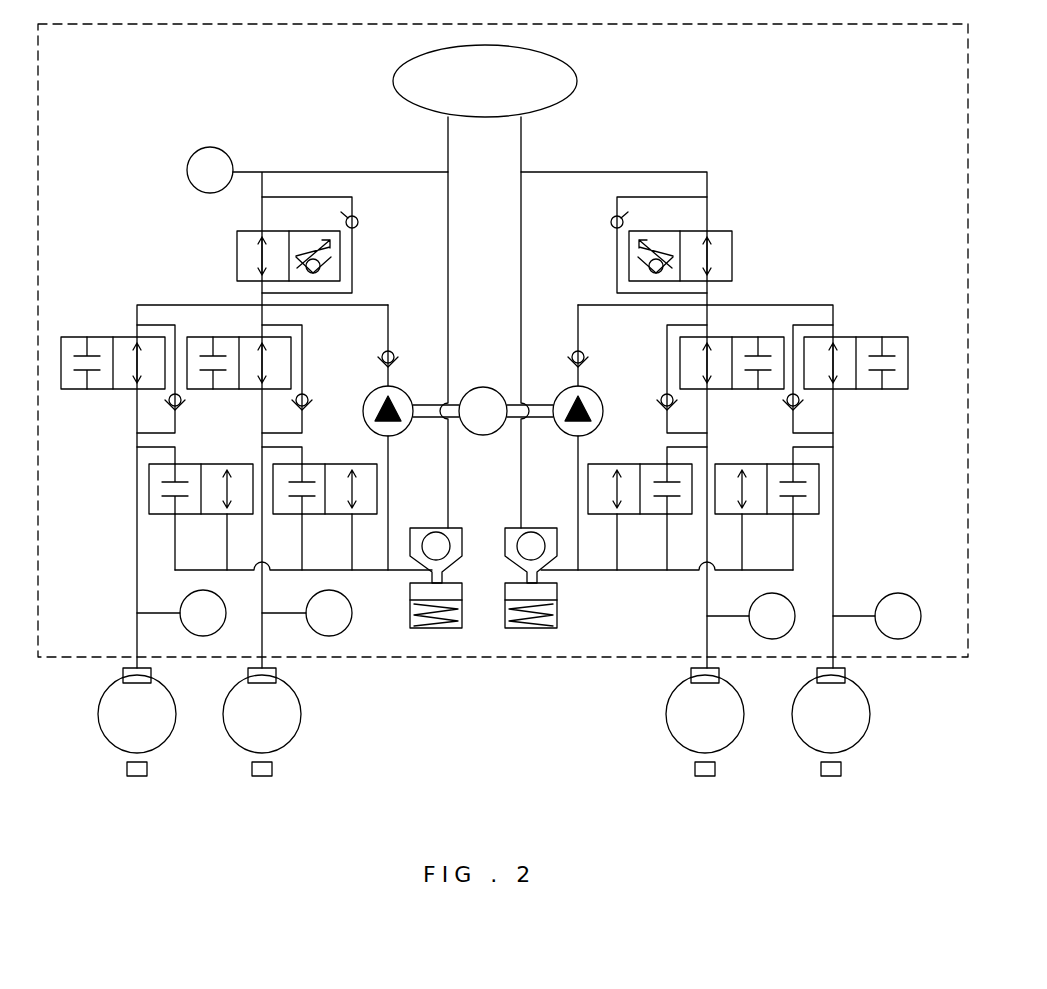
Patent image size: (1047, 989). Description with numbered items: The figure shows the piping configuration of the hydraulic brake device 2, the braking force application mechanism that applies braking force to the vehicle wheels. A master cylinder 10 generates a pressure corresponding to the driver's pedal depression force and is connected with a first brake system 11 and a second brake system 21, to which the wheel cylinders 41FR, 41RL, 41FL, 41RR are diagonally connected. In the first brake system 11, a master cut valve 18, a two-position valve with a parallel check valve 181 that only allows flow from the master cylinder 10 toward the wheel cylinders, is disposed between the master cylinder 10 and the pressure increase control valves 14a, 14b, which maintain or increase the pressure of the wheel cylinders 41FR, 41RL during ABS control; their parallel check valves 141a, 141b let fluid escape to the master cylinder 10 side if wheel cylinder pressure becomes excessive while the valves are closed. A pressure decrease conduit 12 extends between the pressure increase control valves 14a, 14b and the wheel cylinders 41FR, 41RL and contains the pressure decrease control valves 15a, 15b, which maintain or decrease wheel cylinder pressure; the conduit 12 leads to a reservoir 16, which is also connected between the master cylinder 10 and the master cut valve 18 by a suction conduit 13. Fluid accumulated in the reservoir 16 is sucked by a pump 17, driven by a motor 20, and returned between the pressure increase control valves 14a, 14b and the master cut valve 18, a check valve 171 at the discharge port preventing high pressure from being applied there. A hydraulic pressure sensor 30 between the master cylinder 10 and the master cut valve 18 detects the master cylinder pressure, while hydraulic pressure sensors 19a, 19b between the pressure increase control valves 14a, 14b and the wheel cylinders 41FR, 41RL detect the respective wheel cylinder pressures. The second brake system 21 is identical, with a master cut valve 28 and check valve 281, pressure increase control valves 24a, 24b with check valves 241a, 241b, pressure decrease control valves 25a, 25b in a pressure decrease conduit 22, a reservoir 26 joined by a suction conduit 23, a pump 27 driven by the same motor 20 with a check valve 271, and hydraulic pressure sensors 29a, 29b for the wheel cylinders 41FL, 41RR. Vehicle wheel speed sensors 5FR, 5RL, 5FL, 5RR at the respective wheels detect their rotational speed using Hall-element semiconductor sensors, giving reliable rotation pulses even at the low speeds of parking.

The hydraulic brake device 2 is at (968, 83).
The master cylinder 10 is at (577, 82).
The first brake system 11 is at (448, 145).
The second brake system 21 is at (521, 145).
The suction conduit 13 is at (448, 285).
The reservoir conduit (second system) 23 is at (521, 285).
The hydraulic pressure sensor 30 is at (210, 147).
The master cut valve 18 is at (237, 255).
The check valve 181 is at (358, 222).
The second master cut (pressure regulating) valve 28 is at (732, 255).
The check valve of second master cut valve 281 is at (611, 222).
The pressure increase control valve 14a is at (97, 337).
The pressure increase control valve 14b is at (218, 337).
The pressure increase valve (front left) 24a is at (748, 337).
The pressure increase valve (rear right) 24b is at (868, 337).
The check valve 141a is at (165, 405).
The check valve 141b is at (331, 379).
The check valve of pressure increase valve 24a 241a is at (664, 395).
The check valve of pressure increase valve 24b 241b is at (800, 405).
The pressure decrease control valve 15a is at (215, 464).
The pressure decrease control valve 15b is at (340, 464).
The pressure reducing valve (front left) 25a is at (632, 464).
The pressure reducing valve (rear right) 25b is at (752, 464).
The pressure decrease conduit 12 is at (212, 570).
The second pressure reducing conduit 22 is at (622, 570).
The pump 17 is at (408, 434).
The check valve 171 is at (382, 352).
The pump 27 is at (560, 434).
The check valve of second pump 271 is at (584, 352).
The motor 20 is at (483, 435).
The reservoir 16 is at (410, 610).
The second reservoir 26 is at (557, 610).
The hydraulic pressure sensor 19a is at (182, 605).
The hydraulic pressure sensor 19b is at (308, 605).
The hydraulic pressure sensor 29a is at (790, 597).
The hydraulic pressure sensor 29b is at (912, 595).
The wheel cylinder 41FR is at (122, 673).
The wheel cylinder 41RL is at (276, 673).
The wheel cylinder 41FL is at (690, 673).
The wheel cylinder 41RR is at (846, 673).
The vehicle wheel speed sensor 5FR is at (127, 770).
The vehicle wheel speed sensor 5RL is at (272, 770).
The vehicle wheel speed sensor 5FL is at (695, 770).
The vehicle wheel speed sensor 5RR is at (841, 770).